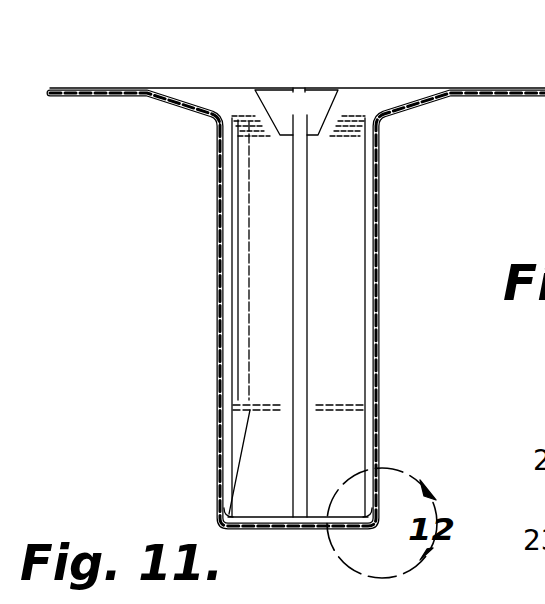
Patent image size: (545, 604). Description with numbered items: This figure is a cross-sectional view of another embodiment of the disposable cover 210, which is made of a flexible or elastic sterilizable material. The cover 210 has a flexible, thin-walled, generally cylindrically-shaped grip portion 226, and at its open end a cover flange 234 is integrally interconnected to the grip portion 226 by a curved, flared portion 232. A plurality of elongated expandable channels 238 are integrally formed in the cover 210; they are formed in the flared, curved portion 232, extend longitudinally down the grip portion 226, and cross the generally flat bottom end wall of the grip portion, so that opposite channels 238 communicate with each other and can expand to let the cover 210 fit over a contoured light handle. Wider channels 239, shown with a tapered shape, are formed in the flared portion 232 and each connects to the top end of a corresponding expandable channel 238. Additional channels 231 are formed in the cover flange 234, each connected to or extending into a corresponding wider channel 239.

The disposable cover 210 is at (160, 280).
The grip portion 226 is at (248, 432).
The channel 231 is at (300, 86).
The flared portion 232 is at (218, 119).
The cover flange 234 is at (190, 89).
The expandable channel 238 is at (218, 360).
The wider channel 239 is at (322, 105).